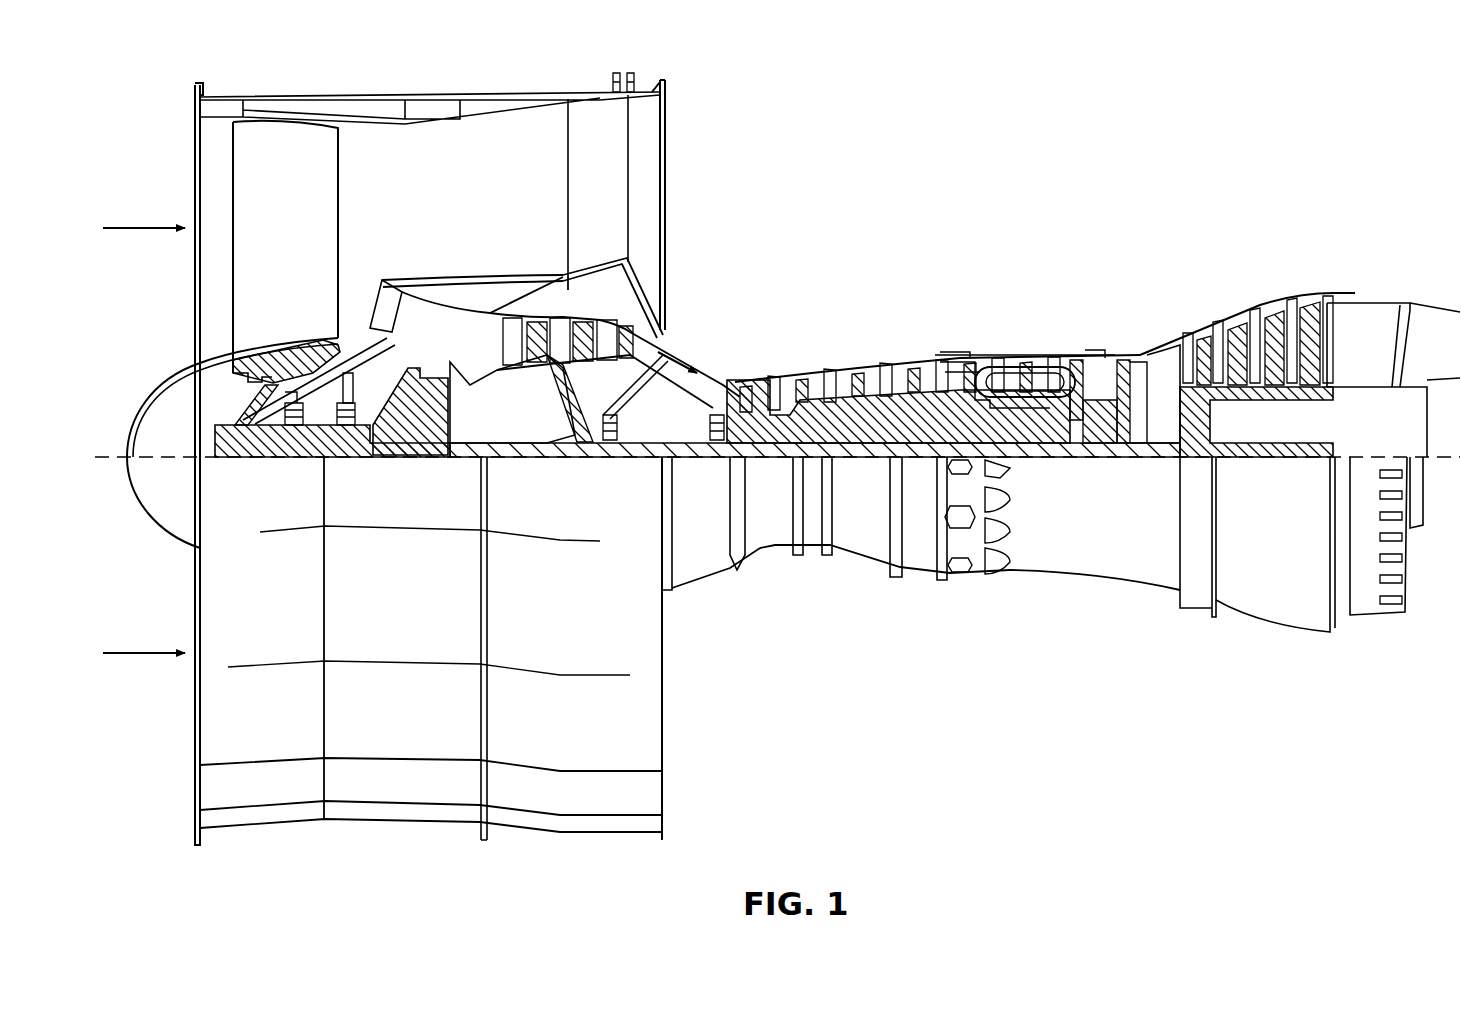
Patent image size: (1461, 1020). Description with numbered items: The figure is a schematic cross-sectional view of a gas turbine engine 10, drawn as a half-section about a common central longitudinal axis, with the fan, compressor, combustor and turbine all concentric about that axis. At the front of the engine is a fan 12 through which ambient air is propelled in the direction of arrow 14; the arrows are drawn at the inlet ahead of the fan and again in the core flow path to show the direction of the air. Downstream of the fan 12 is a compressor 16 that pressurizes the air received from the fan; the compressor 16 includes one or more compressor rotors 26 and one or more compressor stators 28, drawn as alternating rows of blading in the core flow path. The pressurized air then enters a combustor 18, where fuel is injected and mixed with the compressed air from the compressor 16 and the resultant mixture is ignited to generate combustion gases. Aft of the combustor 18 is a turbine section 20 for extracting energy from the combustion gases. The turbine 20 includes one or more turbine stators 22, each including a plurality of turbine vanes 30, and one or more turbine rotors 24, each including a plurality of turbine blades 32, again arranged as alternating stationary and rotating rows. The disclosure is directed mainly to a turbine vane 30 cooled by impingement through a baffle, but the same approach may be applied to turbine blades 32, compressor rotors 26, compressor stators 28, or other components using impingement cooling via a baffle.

The gas turbine engine 10 is at (205, 66).
The fan 12 is at (220, 105).
The arrow 14 is at (140, 228).
The compressor 16 is at (775, 376).
The combustor 18 is at (1035, 378).
The turbine section 20 is at (1275, 600).
The turbine stators 22 is at (1250, 322).
The turbine rotors 24 is at (1290, 310).
The compressor rotors 26 is at (790, 377).
The compressor stators 28 is at (815, 377).
The turbine vanes 30 is at (1262, 330).
The turbine blades 32 is at (1318, 300).